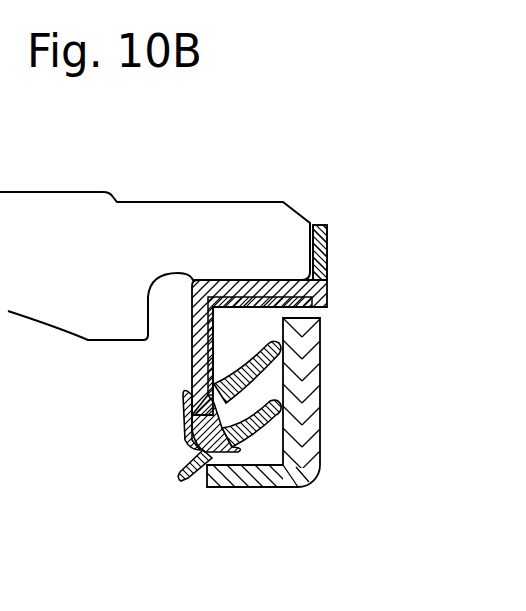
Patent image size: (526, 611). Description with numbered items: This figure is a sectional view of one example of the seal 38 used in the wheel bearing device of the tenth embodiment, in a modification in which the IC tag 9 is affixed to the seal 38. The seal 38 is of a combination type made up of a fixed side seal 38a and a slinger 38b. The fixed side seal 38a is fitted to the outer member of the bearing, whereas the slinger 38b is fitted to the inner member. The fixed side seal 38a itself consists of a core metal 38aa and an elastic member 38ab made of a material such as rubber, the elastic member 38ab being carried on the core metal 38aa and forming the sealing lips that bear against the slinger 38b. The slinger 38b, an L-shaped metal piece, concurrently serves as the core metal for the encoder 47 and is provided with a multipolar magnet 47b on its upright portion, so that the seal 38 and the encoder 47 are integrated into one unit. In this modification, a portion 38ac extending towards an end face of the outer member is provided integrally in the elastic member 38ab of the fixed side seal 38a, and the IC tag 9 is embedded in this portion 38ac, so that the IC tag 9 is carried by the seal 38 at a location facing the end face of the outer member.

The IC tag 9 is at (326, 243).
The seal 38 is at (235, 299).
The fixed side seal 38a is at (192, 347).
The core metal 38aa is at (213, 287).
The elastic member 38ab is at (222, 393).
The portion extending towards an end face of the outer member 38ac is at (315, 222).
The slinger 38b is at (255, 480).
The encoder 47 is at (305, 440).
The multipolar magnet 47b is at (312, 432).